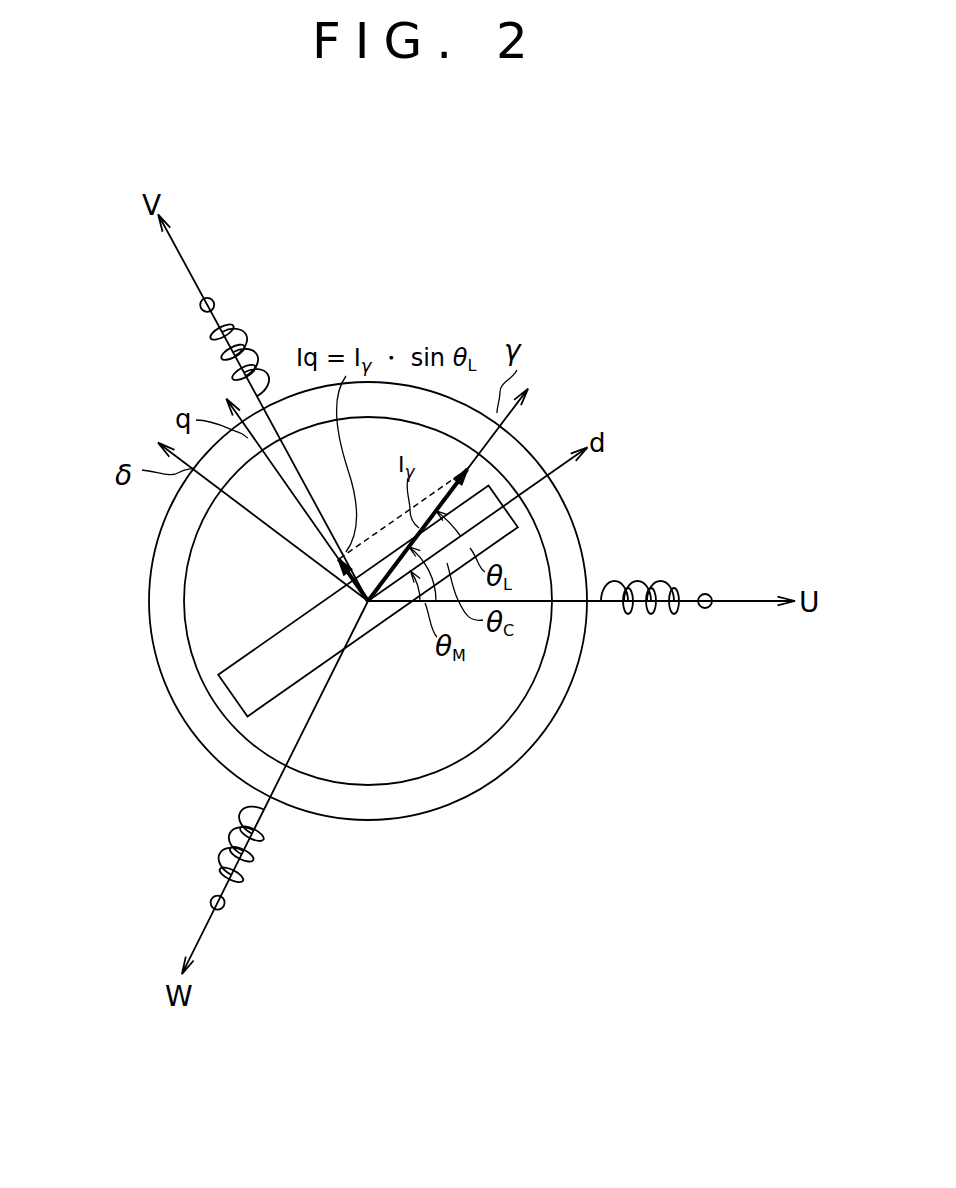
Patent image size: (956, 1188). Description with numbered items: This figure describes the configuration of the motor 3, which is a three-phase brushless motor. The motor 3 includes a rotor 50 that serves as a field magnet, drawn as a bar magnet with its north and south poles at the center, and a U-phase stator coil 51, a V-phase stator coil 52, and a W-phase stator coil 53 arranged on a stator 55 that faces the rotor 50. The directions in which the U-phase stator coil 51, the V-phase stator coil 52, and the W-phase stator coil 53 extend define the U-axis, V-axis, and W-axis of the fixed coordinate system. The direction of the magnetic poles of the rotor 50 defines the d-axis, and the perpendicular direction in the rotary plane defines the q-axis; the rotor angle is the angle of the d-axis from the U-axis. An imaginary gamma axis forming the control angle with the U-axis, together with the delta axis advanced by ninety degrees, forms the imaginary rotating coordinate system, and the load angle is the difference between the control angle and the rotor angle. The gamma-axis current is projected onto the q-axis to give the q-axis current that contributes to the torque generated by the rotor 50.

The motor 3 is at (397, 508).
The rotor 50 is at (283, 652).
The U-phase stator coil 51 is at (631, 581).
The V-phase stator coil 52 is at (268, 352).
The W-phase stator coil 53 is at (228, 842).
The stator 55 is at (538, 703).